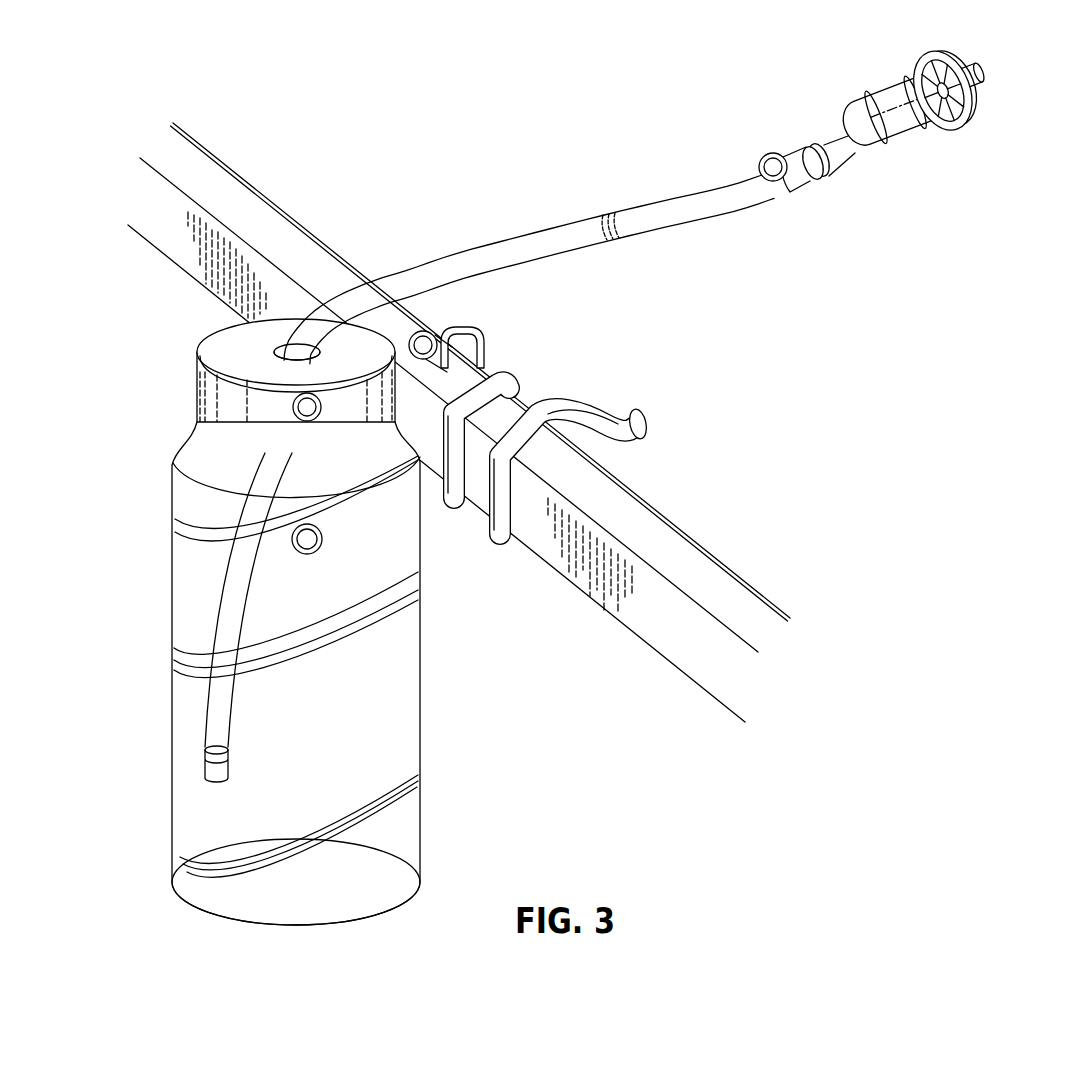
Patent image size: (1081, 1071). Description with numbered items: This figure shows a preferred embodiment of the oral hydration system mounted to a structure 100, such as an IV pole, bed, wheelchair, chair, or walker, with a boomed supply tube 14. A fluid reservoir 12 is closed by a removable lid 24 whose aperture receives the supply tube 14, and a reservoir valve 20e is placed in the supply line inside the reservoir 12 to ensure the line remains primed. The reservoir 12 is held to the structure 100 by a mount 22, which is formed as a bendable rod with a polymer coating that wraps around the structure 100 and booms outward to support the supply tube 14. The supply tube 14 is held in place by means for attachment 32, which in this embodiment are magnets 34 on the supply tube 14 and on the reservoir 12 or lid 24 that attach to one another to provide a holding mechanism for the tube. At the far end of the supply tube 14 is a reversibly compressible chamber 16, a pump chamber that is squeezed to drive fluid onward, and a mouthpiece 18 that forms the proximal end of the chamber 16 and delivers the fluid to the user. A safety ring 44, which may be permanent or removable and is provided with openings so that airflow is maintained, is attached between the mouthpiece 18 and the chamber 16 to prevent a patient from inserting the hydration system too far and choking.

The fluid reservoir 12 is at (264, 673).
The supply tube 14 is at (684, 226).
The reversibly compressible chamber 16 is at (922, 128).
The mouthpiece 18 is at (986, 64).
The reservoir valve 20e is at (229, 770).
The mount 22 is at (608, 406).
The removable lid 24 is at (197, 383).
The means for attachment 32 is at (539, 323).
The magnets 34 is at (766, 156).
The safety ring 44 is at (912, 56).
The structure 100 is at (708, 634).